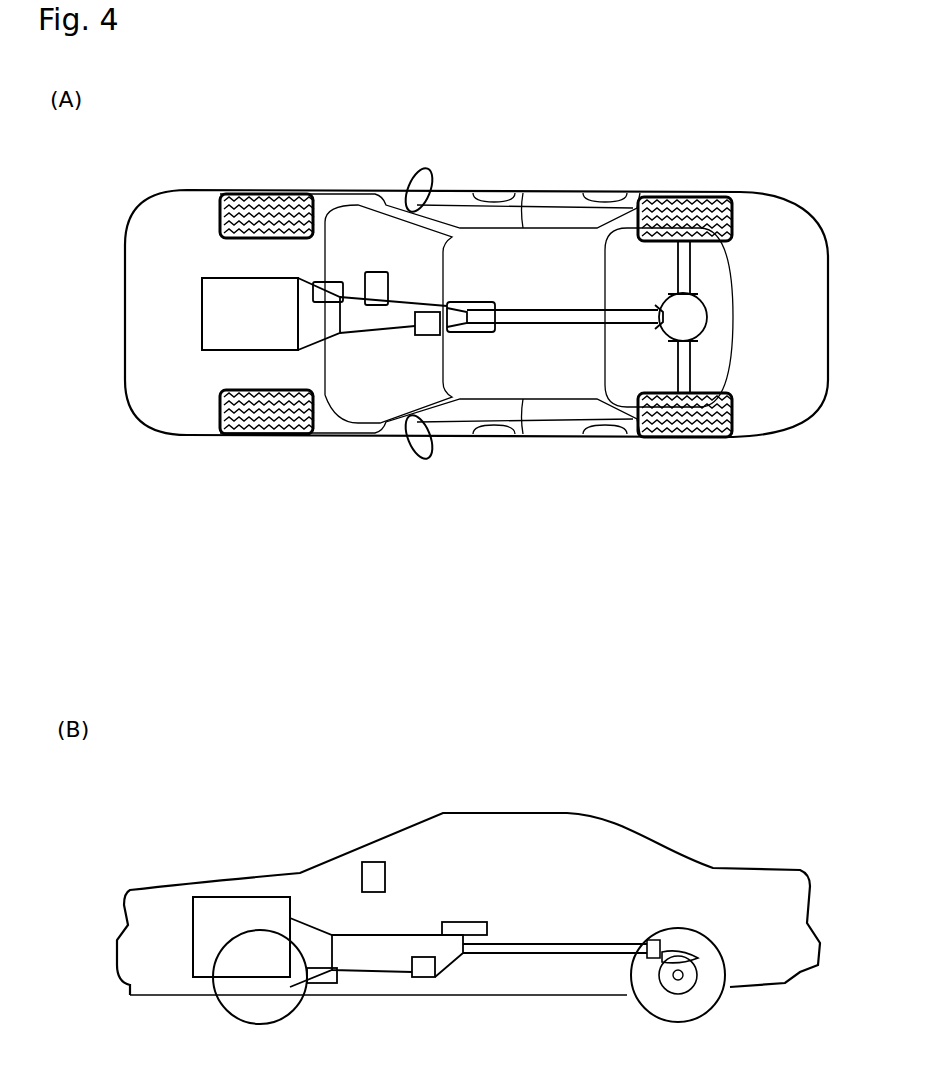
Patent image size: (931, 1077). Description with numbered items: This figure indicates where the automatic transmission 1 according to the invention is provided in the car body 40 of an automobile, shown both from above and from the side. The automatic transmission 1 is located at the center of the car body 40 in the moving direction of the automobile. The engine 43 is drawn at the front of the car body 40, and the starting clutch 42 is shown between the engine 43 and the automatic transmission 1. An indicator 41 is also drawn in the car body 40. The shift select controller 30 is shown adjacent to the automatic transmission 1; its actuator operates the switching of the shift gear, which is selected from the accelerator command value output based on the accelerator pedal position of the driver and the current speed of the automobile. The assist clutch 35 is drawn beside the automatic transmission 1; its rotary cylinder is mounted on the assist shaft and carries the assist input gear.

The automatic transmission 1 is at (359, 320).
The shift select controller 30 is at (483, 328).
The assist clutch 35 is at (428, 330).
The car body 40 is at (780, 393).
The indicator 41 is at (380, 290).
The starting clutch 42 is at (335, 292).
The engine 43 is at (217, 337).